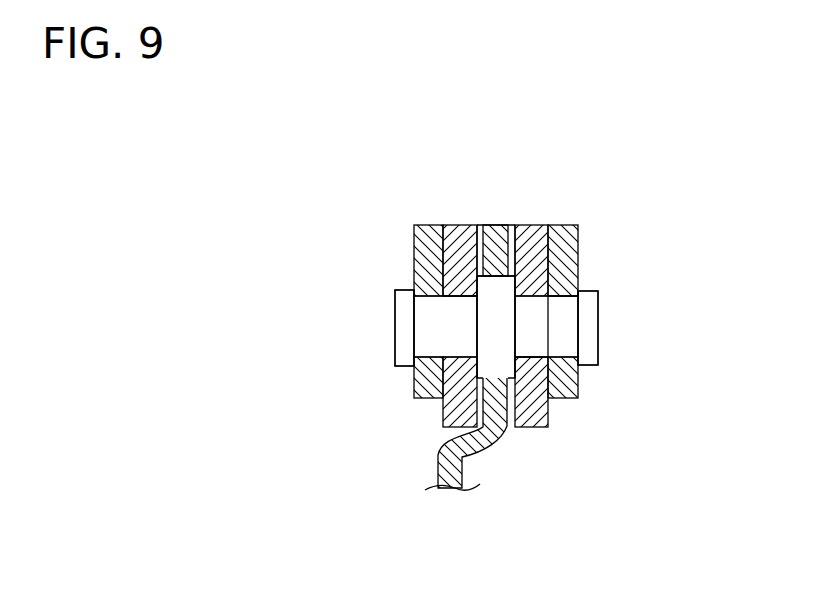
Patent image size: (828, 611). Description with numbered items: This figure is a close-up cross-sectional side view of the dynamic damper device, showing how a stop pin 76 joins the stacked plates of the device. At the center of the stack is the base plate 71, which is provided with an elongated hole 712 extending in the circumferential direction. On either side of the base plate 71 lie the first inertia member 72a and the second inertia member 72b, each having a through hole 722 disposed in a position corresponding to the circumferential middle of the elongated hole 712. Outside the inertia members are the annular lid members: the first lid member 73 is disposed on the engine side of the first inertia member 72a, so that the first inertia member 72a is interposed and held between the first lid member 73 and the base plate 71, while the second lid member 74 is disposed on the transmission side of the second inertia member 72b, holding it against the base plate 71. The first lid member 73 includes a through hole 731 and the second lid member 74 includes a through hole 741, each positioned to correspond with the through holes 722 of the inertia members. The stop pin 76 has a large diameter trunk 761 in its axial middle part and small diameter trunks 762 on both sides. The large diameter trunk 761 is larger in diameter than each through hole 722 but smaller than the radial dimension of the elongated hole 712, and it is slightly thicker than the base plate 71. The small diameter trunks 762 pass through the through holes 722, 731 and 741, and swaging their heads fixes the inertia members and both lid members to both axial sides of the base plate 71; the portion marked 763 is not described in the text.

The base plate 71 is at (493, 440).
The elongated hole 712 is at (489, 277).
The first inertia member 72a is at (458, 233).
The second inertia member 72b is at (533, 228).
The through hole 722 is at (460, 297).
The first lid member 73 is at (430, 233).
The through hole 731 is at (436, 357).
The second lid member 74 is at (568, 232).
The through hole 741 is at (553, 297).
The stop pin 76 is at (608, 352).
The large diameter trunk 761 is at (497, 362).
The small diameter trunk 762 is at (442, 323).
The spacer flange 763 is at (593, 315).